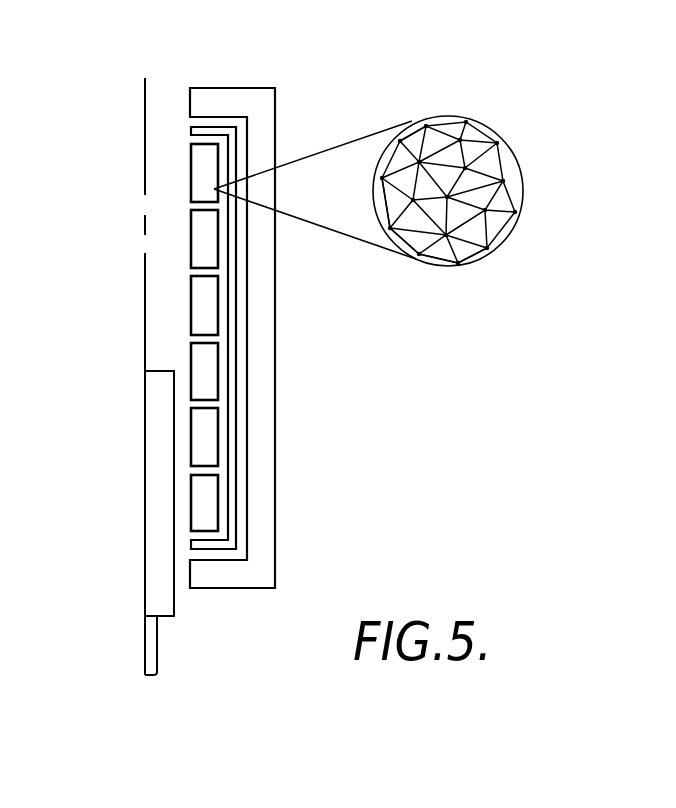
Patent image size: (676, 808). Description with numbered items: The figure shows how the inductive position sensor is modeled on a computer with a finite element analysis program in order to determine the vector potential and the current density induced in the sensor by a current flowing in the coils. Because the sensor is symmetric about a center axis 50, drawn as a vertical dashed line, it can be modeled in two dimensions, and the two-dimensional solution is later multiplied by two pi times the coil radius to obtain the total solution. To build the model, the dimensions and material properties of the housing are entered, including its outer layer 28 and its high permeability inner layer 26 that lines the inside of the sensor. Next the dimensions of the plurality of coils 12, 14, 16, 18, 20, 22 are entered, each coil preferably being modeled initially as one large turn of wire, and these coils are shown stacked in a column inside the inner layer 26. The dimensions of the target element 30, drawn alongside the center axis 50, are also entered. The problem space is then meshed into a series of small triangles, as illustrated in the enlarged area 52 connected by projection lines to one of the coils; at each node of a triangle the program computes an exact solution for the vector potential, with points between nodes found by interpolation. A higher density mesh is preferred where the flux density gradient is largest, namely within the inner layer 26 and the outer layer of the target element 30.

The coil 12 is at (208, 159).
The coil 14 is at (202, 246).
The coil 16 is at (202, 321).
The coil 18 is at (202, 378).
The coil 20 is at (203, 443).
The coil 22 is at (203, 507).
The inner layer 26 is at (192, 130).
The outer layer 28 is at (275, 92).
The target element 30 is at (150, 568).
The center axis 50 is at (145, 140).
The area 52 is at (475, 258).